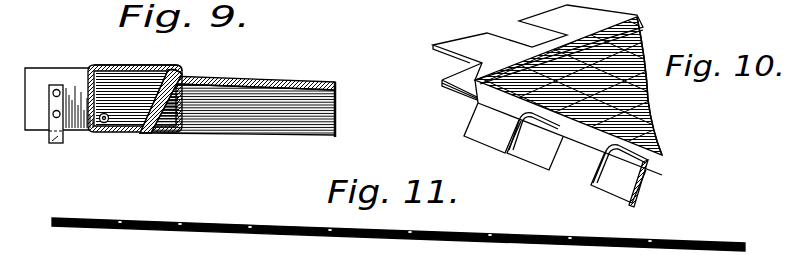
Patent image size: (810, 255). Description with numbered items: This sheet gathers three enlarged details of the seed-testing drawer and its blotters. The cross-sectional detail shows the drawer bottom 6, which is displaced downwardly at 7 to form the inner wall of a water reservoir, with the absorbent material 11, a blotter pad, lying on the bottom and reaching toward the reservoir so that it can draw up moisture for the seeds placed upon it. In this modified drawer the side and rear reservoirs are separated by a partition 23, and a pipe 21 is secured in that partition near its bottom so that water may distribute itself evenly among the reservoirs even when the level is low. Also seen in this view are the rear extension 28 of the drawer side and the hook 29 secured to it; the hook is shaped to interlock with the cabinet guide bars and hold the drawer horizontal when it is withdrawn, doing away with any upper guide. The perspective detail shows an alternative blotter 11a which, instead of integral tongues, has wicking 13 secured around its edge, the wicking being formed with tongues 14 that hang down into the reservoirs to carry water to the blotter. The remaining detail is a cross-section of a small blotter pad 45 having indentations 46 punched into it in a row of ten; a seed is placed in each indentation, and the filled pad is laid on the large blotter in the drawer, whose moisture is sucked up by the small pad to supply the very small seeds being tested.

In FIG. 9, the bottom 6 is at (310, 80).
In FIG. 9, the downwardly displaced portion 7 is at (167, 106).
In FIG. 9, the absorbent material 11 is at (250, 78).
In FIG. 10, the blotter 11a is at (655, 104).
In FIG. 10, the wicking 13 is at (663, 138).
In FIG. 9, the tongues 14 is at (156, 68).
In FIG. 10, the tongues 14 is at (545, 167).
In FIG. 9, the pipes 21 is at (105, 124).
In FIG. 9, the partition 23 is at (128, 88).
In FIG. 9, the rear extension 28 is at (50, 77).
In FIG. 9, the hook 29 is at (55, 138).
In FIG. 11, the blotter pad 45 is at (268, 226).
In FIG. 11, the indentations 46 is at (179, 222).